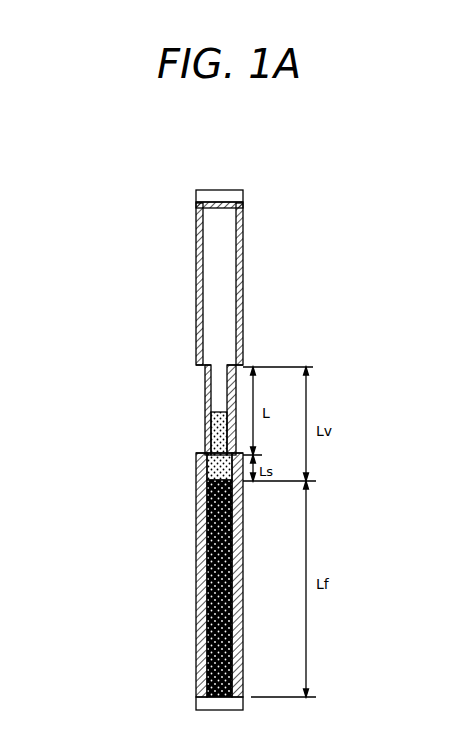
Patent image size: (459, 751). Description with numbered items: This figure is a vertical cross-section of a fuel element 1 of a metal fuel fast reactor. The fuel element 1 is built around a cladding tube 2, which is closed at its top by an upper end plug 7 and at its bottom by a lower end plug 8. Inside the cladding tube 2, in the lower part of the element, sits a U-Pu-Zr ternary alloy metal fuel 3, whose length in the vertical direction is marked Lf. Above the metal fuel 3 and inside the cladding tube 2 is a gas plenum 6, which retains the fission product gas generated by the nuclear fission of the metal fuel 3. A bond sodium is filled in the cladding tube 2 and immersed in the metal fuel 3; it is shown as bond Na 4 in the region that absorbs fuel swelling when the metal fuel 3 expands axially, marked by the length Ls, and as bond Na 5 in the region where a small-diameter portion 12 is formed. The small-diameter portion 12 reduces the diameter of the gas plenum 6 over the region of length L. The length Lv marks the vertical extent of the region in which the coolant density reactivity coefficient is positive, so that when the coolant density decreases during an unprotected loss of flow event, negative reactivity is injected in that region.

The fuel element 1 is at (224, 190).
The cladding tube 2 is at (240, 243).
The metal fuel 3 is at (218, 568).
The bond Na 4 is at (201, 466).
The bond Na 5 is at (216, 429).
The gas plenum 6 is at (218, 284).
The upper end plug 7 is at (243, 196).
The lower end plug 8 is at (201, 700).
The small-diameter portion 12 is at (208, 383).